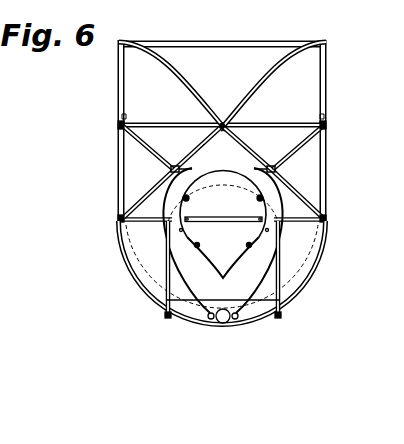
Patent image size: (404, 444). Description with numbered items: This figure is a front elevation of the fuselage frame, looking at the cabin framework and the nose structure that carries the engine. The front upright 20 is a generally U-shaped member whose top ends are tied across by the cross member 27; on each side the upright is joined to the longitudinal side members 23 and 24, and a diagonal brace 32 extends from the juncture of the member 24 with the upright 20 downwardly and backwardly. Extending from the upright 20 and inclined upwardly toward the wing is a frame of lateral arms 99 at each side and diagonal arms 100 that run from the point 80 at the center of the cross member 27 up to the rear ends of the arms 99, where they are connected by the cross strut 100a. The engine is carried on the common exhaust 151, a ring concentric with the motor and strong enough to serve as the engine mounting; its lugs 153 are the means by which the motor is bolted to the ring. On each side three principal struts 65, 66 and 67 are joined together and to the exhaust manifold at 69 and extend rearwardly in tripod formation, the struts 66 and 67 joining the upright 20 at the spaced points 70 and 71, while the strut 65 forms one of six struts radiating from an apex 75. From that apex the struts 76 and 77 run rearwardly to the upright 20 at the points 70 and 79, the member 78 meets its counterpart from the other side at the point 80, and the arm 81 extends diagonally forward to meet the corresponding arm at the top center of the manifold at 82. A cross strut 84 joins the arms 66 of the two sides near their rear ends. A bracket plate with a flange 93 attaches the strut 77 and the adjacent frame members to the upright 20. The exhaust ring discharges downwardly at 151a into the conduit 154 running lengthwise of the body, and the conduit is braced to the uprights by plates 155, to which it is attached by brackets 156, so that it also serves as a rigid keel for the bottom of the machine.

The cross strut 100a is at (236, 46).
The diagonal arm 100 is at (181, 77).
The lateral arm 99 is at (332, 73).
The cross member 27 is at (266, 124).
The center of cross member 80 is at (222, 121).
The flange 93 is at (125, 116).
The attachment point 79 is at (119, 121).
The longitudinal member 23 is at (117, 125).
The strut 77 is at (148, 146).
The arm 81 is at (196, 153).
The member 78 is at (214, 137).
The junction at top of exhaust manifold 82 is at (249, 144).
The apex 75 is at (178, 164).
The strut 76 is at (156, 191).
The front upright 20 is at (118, 165).
The strut 65 is at (189, 198).
The common exhaust 151 is at (183, 207).
The cross strut 84 is at (219, 217).
The side junction 69 is at (182, 230).
The longitudinal member 24 is at (117, 213).
The attachment point 70 is at (119, 224).
The strut 66 is at (222, 232).
The diagonal brace 32 is at (138, 267).
The strut 67 is at (170, 287).
The attachment point 71 is at (167, 317).
The plate 155 is at (190, 311).
The bracket 156 is at (212, 320).
The conduit 154 is at (226, 322).
The discharge of exhaust ring 151a is at (258, 300).
The lug 153 is at (247, 246).